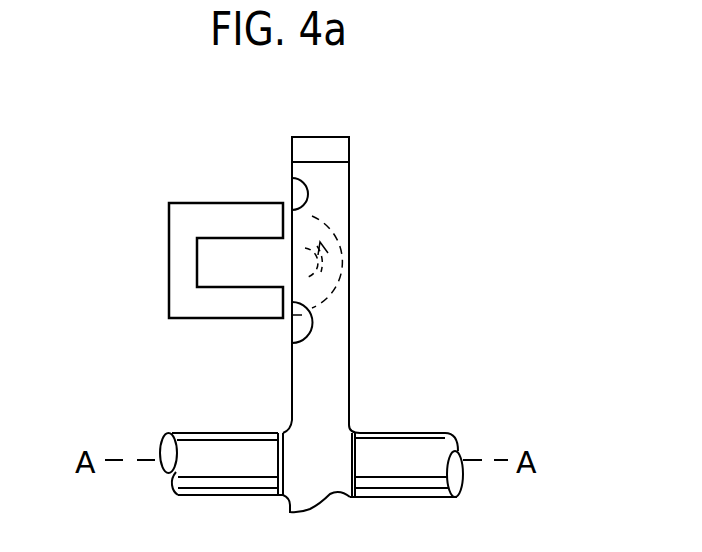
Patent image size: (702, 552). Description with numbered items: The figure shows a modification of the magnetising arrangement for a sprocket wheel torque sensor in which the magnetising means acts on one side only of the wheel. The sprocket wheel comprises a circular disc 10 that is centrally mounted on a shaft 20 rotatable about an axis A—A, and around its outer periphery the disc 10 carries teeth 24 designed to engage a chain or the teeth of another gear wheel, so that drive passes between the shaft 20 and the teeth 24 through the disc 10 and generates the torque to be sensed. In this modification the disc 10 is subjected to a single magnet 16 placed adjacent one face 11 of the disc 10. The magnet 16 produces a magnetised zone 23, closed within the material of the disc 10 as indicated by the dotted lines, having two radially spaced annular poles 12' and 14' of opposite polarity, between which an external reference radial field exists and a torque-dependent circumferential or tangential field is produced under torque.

The circular disc 10 is at (350, 311).
The face 11 is at (290, 392).
The annular pole 12' is at (270, 185).
The annular pole 14' is at (271, 332).
The magnet 16 is at (197, 217).
The shaft 20 is at (388, 450).
The magnetised zone 23 is at (350, 236).
The teeth 24 is at (325, 137).